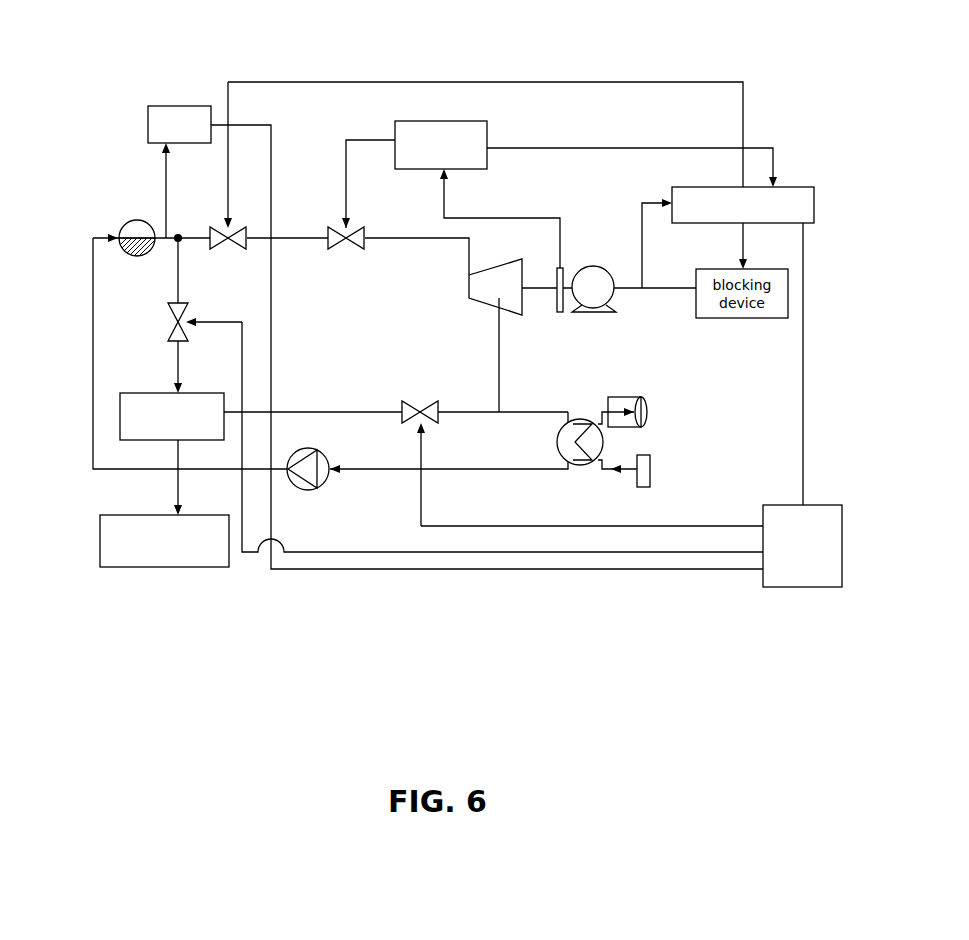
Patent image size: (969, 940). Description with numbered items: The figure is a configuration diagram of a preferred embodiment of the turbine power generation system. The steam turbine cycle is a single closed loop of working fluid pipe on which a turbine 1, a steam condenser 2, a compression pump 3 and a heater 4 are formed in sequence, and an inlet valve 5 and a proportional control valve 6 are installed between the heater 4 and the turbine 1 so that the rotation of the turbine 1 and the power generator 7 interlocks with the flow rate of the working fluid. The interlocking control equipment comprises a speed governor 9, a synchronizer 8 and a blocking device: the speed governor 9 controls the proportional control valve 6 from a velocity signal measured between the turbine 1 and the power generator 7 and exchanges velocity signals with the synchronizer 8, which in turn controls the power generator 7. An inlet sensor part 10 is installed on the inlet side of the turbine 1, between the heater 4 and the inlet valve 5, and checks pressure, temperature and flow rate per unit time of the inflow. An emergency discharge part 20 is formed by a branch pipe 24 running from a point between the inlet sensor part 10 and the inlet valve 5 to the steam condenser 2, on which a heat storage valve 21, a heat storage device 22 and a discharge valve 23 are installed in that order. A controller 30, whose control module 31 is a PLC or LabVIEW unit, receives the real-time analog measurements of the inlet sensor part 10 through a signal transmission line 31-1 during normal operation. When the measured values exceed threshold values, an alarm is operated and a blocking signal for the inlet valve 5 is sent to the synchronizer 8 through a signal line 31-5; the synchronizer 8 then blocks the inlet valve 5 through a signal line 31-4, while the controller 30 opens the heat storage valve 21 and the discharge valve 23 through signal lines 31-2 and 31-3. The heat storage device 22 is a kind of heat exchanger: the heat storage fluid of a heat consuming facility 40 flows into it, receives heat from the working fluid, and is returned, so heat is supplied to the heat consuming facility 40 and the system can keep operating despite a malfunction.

The turbine 1 is at (469, 287).
The steam condenser 2 is at (557, 441).
The compression pump 3 is at (320, 485).
The heater 4 is at (137, 220).
The inlet valve 5 is at (236, 228).
The proportional control valve 6 is at (344, 250).
The power generator 7 is at (592, 266).
The synchronizer 8 is at (793, 187).
The speed governor 9 is at (424, 169).
The inlet sensor part 10 is at (161, 106).
The emergency discharge part 20 is at (124, 382).
The heat storage valve 21 is at (170, 308).
The heat storage device 22 is at (200, 393).
The discharge valve 23 is at (424, 401).
The branch pipe 24 is at (179, 281).
The controller 30 is at (774, 604).
The control module 31 is at (810, 588).
The signal transmission line 31-1 is at (463, 570).
The signal line 31-2 is at (537, 553).
The signal line 31-3 is at (653, 527).
The signal line 31-4 is at (499, 81).
The signal line 31-5 is at (803, 445).
The heat consuming facility 40 is at (206, 567).